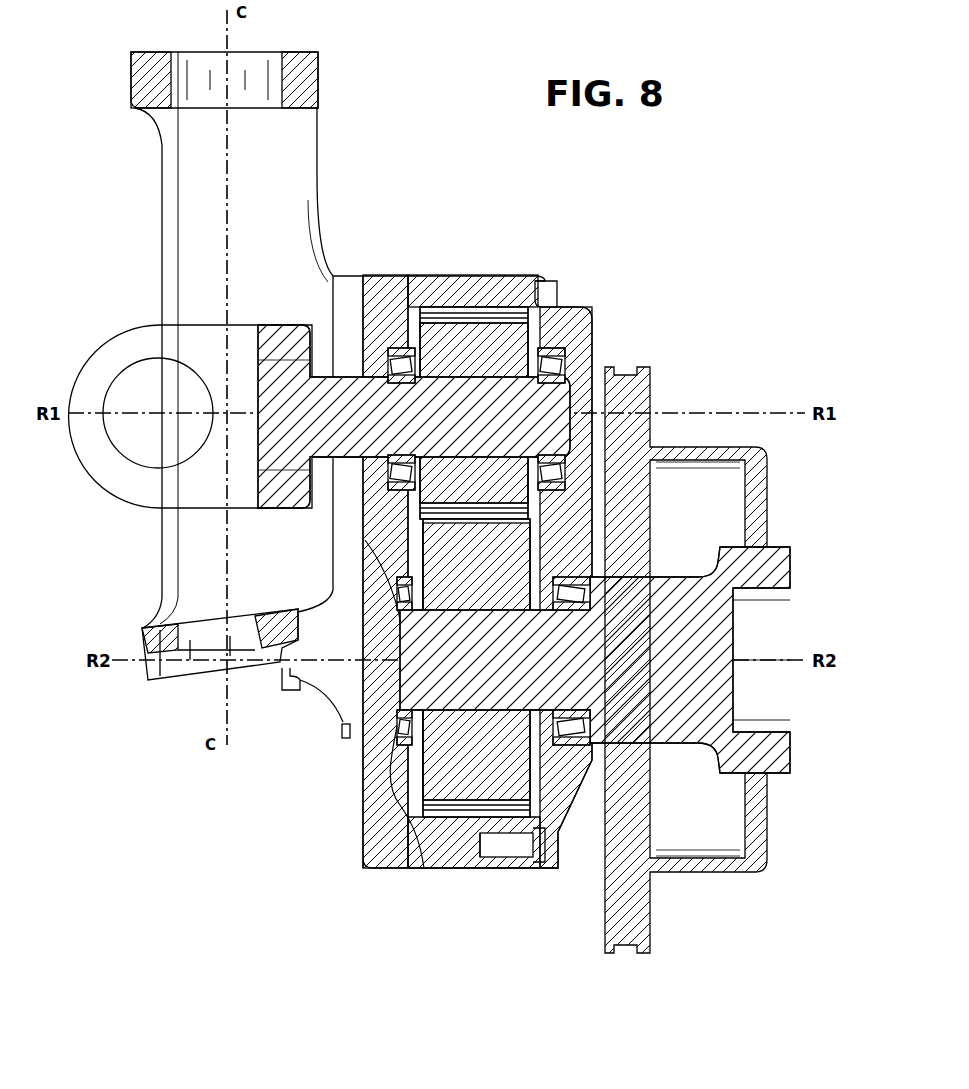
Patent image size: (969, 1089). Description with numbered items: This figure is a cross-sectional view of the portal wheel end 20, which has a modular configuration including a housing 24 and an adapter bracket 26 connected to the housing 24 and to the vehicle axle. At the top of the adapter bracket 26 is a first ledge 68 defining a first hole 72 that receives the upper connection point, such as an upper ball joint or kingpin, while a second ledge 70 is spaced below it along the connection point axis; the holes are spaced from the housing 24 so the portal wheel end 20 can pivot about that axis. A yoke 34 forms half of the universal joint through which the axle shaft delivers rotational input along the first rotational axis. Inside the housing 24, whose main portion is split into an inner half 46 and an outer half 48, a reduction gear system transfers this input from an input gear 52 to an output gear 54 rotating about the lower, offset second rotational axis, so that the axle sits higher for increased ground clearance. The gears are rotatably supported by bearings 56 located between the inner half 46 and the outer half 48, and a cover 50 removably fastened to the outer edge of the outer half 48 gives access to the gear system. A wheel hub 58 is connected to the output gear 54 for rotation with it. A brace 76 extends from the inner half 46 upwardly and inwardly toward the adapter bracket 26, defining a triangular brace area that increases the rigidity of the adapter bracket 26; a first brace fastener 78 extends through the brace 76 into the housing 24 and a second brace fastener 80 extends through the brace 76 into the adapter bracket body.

The portal wheel end 20 is at (450, 878).
The housing 24 is at (505, 277).
The adapter bracket 26 is at (311, 80).
The yoke 34 is at (105, 355).
The inner half 46 is at (372, 848).
The outer half 48 is at (468, 862).
The cover 50 is at (553, 292).
The input gear 52 is at (470, 322).
The output gear 54 is at (440, 762).
The bearings 56 is at (398, 356).
The wheel hub 58 is at (780, 567).
The first ledge 68 is at (133, 72).
The second ledge 70 is at (152, 676).
The first hole 72 is at (172, 80).
The brace 76 is at (325, 688).
The first brace fastener 78 is at (340, 730).
The second brace fastener 80 is at (293, 688).